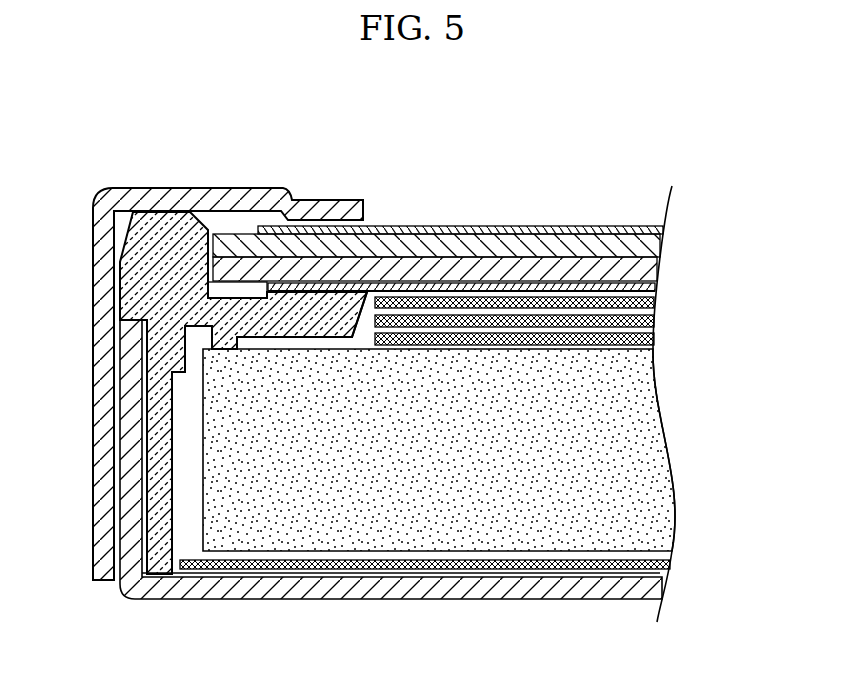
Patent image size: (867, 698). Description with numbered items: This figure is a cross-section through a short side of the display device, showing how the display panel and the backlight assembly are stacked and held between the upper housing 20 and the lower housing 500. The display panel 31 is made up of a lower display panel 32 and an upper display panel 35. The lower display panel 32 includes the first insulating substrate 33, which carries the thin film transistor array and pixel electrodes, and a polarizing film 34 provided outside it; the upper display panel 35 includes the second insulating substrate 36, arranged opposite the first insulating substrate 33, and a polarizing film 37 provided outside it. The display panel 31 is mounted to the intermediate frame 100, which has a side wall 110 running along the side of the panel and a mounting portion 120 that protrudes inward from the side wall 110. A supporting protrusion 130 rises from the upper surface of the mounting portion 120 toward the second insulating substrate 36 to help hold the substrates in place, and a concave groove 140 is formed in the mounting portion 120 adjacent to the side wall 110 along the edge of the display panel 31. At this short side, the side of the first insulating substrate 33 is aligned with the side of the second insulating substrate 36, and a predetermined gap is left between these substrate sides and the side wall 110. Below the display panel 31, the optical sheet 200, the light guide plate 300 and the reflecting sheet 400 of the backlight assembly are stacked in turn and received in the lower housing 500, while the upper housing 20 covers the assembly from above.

The upper housing 20 is at (93, 380).
The intermediate frame 100 is at (387, 334).
The side wall 110 is at (160, 252).
The mounting portion 120 is at (292, 325).
The supporting protrusion 130 is at (320, 285).
The concave groove 140 is at (228, 290).
The display panel 31 is at (516, 261).
The lower display panel 32 is at (497, 282).
The first insulating substrate 33 is at (651, 270).
The polarizing film 34 is at (651, 289).
The upper display panel 35 is at (497, 238).
The second insulating substrate 36 is at (656, 246).
The polarizing film 37 is at (658, 229).
The optical sheet 200 is at (656, 316).
The light guide plate 300 is at (633, 423).
The reflecting sheet 400 is at (340, 570).
The lower housing 500 is at (238, 602).